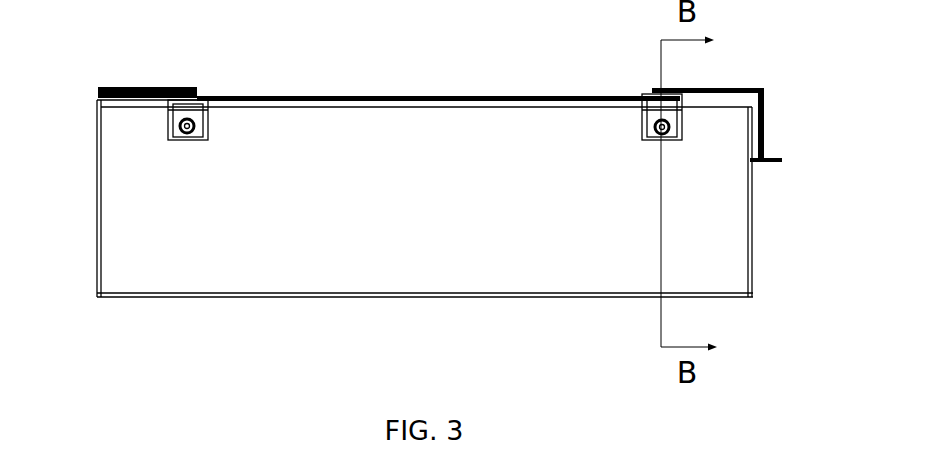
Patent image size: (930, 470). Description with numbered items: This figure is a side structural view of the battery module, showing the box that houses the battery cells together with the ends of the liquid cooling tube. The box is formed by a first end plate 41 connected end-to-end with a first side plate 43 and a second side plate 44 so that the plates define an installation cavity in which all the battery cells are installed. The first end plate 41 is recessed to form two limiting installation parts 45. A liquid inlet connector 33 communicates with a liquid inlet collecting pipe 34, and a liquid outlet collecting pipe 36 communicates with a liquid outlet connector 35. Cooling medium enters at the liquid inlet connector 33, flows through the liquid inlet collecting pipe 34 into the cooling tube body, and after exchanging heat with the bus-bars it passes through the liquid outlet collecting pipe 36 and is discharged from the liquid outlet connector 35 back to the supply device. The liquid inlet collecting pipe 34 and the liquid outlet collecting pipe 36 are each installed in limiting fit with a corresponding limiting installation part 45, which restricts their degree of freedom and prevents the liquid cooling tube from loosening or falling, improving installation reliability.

The liquid inlet connector 33 is at (206, 118).
The liquid inlet collecting pipe 34 is at (170, 118).
The liquid outlet connector 35 is at (648, 122).
The liquid outlet collecting pipe 36 is at (685, 118).
The first end plate 41 is at (405, 283).
The first side plate 43 is at (753, 223).
The second side plate 44 is at (97, 222).
The limiting installation part 45 is at (167, 135).